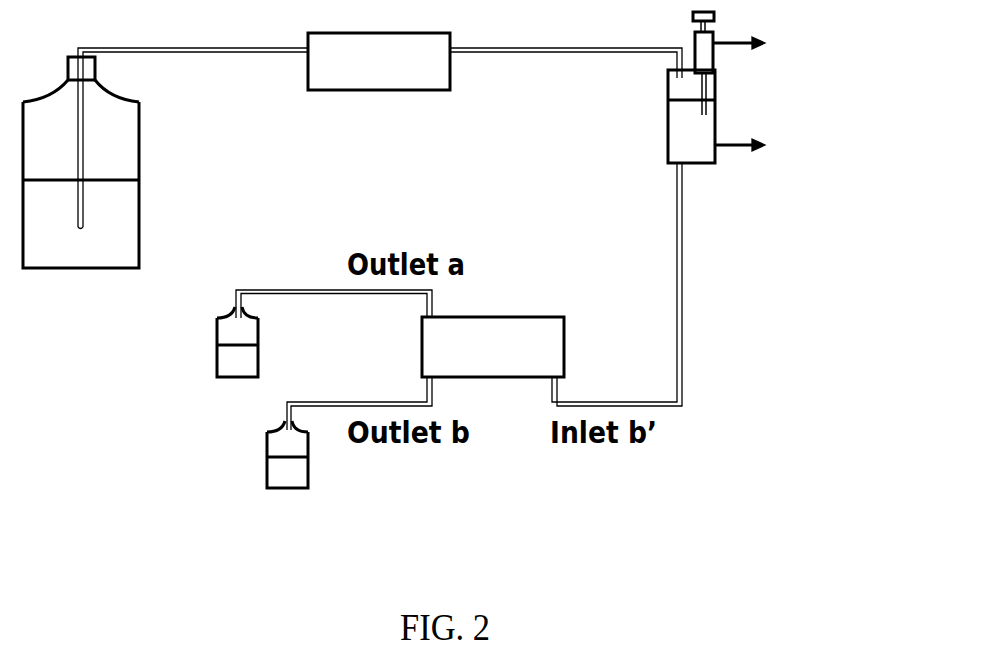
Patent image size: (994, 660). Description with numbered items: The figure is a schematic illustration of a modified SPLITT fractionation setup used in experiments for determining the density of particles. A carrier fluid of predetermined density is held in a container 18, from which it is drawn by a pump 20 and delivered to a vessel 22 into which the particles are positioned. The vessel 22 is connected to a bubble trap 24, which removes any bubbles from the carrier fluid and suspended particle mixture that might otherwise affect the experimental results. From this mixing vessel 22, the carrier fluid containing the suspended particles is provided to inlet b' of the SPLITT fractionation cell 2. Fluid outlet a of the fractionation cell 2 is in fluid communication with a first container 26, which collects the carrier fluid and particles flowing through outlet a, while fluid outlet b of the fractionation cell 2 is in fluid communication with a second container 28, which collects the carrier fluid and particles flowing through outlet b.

The SPLITT fractionation cell 2 is at (533, 317).
The container 18 is at (139, 132).
The pump 20 is at (372, 90).
The vessel 22 is at (668, 112).
The bubble trap 24 is at (873, 182).
The first container 26 is at (217, 363).
The second container 28 is at (267, 475).